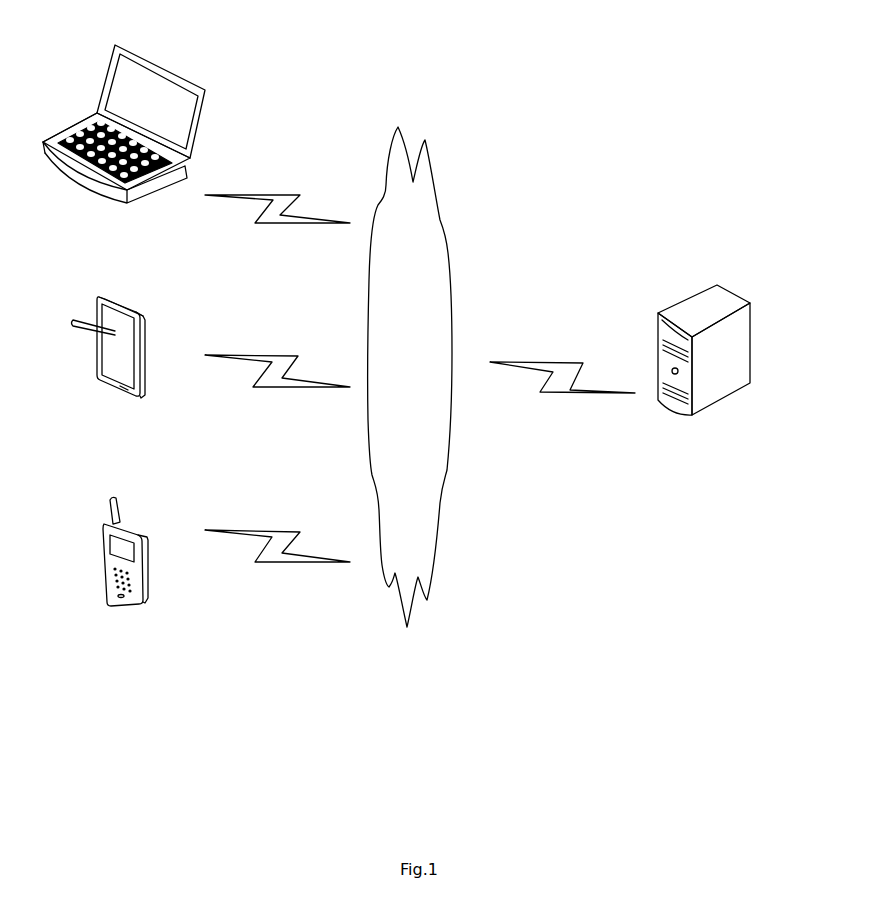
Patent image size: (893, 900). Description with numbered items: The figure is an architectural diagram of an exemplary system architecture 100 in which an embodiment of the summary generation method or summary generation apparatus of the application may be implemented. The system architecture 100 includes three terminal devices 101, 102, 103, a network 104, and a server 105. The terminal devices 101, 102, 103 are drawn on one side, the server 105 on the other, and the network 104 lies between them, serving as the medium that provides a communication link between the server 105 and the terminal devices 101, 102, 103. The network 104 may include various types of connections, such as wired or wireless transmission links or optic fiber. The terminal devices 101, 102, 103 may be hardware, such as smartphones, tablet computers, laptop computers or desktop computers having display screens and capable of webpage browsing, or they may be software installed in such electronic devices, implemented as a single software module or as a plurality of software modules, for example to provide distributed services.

The system architecture 100 is at (661, 35).
The terminal device 101 is at (125, 571).
The terminal device 102 is at (109, 368).
The terminal device 103 is at (124, 143).
The network 104 is at (410, 377).
The server 105 is at (704, 371).